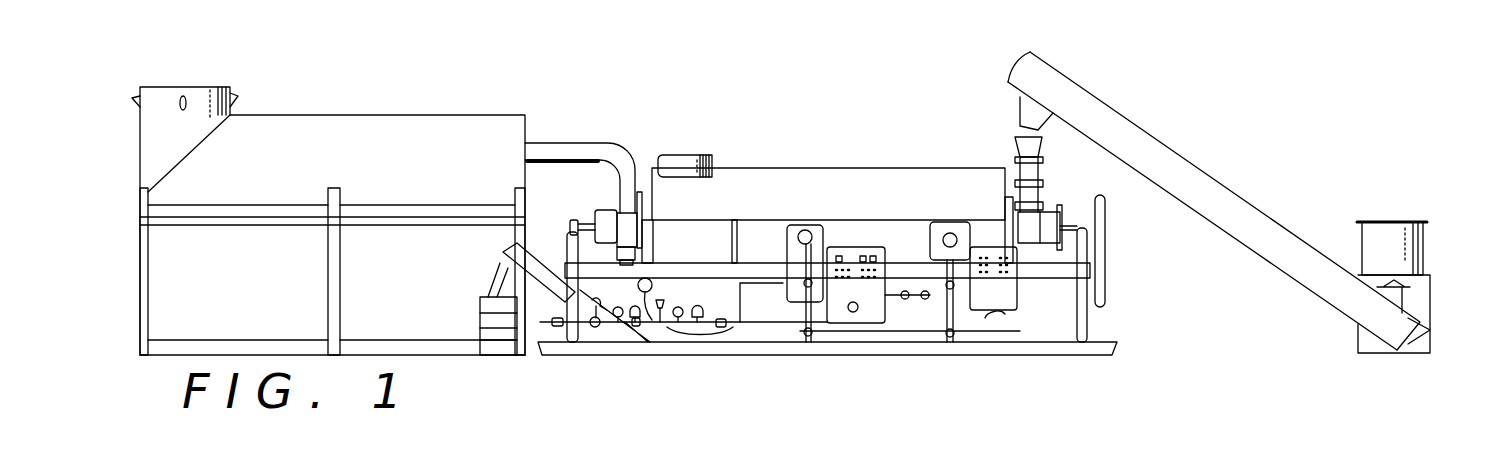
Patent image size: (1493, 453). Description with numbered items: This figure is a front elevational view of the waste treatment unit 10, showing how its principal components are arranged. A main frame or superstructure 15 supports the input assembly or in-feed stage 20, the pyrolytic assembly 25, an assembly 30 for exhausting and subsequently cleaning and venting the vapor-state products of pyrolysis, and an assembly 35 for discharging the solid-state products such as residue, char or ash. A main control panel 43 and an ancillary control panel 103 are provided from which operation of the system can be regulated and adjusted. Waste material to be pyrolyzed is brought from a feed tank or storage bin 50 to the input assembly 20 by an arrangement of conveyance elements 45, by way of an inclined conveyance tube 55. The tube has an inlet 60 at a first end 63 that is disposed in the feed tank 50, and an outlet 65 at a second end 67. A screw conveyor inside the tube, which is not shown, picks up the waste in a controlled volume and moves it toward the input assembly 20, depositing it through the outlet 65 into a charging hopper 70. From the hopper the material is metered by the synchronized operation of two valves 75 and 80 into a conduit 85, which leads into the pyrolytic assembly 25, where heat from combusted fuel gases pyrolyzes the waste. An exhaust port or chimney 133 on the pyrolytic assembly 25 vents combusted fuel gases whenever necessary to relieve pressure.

The waste treatment unit 10 is at (747, 72).
The main frame 15 is at (1050, 278).
The input assembly 20 is at (1048, 175).
The pyrolytic assembly 25 is at (853, 167).
The exhaust assembly 30 is at (548, 143).
The discharge assembly 35 is at (602, 212).
The main control panel 43 is at (868, 324).
The conveyance elements 45 is at (1248, 203).
The feed tank 50 is at (1390, 222).
The conveyance tube 55 is at (1317, 268).
The inlet 60 is at (1417, 313).
The first end 63 is at (1417, 345).
The outlet 65 is at (1020, 127).
The second end 67 is at (1027, 63).
The charging hopper 70 is at (1015, 148).
The valve 75 is at (1043, 160).
The valve 80 is at (1038, 188).
The conduit 85 is at (1020, 177).
The ancillary control panel 103 is at (995, 311).
The exhaust port 133 is at (677, 153).